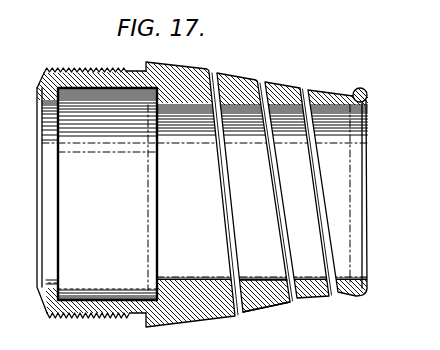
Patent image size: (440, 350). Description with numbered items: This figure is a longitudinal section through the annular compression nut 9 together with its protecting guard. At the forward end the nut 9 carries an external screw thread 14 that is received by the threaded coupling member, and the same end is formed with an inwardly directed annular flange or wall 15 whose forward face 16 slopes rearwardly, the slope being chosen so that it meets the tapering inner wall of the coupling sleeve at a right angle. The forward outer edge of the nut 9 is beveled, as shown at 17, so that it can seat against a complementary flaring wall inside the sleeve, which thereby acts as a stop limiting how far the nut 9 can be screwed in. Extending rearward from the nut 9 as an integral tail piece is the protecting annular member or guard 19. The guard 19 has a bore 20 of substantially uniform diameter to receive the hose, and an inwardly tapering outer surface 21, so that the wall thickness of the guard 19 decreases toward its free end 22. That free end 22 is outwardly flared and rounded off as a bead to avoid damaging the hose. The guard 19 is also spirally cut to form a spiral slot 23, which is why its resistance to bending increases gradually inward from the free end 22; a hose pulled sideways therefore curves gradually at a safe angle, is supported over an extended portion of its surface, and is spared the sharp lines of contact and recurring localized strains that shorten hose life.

The annular compression nut 9 is at (176, 68).
The external screw thread 14 is at (88, 72).
The inwardly directed annular flange 15 is at (63, 293).
The forward face 16 is at (40, 281).
The beveled edge 17 is at (42, 72).
The protecting annular guard 19 is at (237, 72).
The bore 20 is at (251, 282).
The inwardly tapering outer surface 21 is at (262, 309).
The free end 22 is at (358, 90).
The spiral slot 23 is at (263, 82).